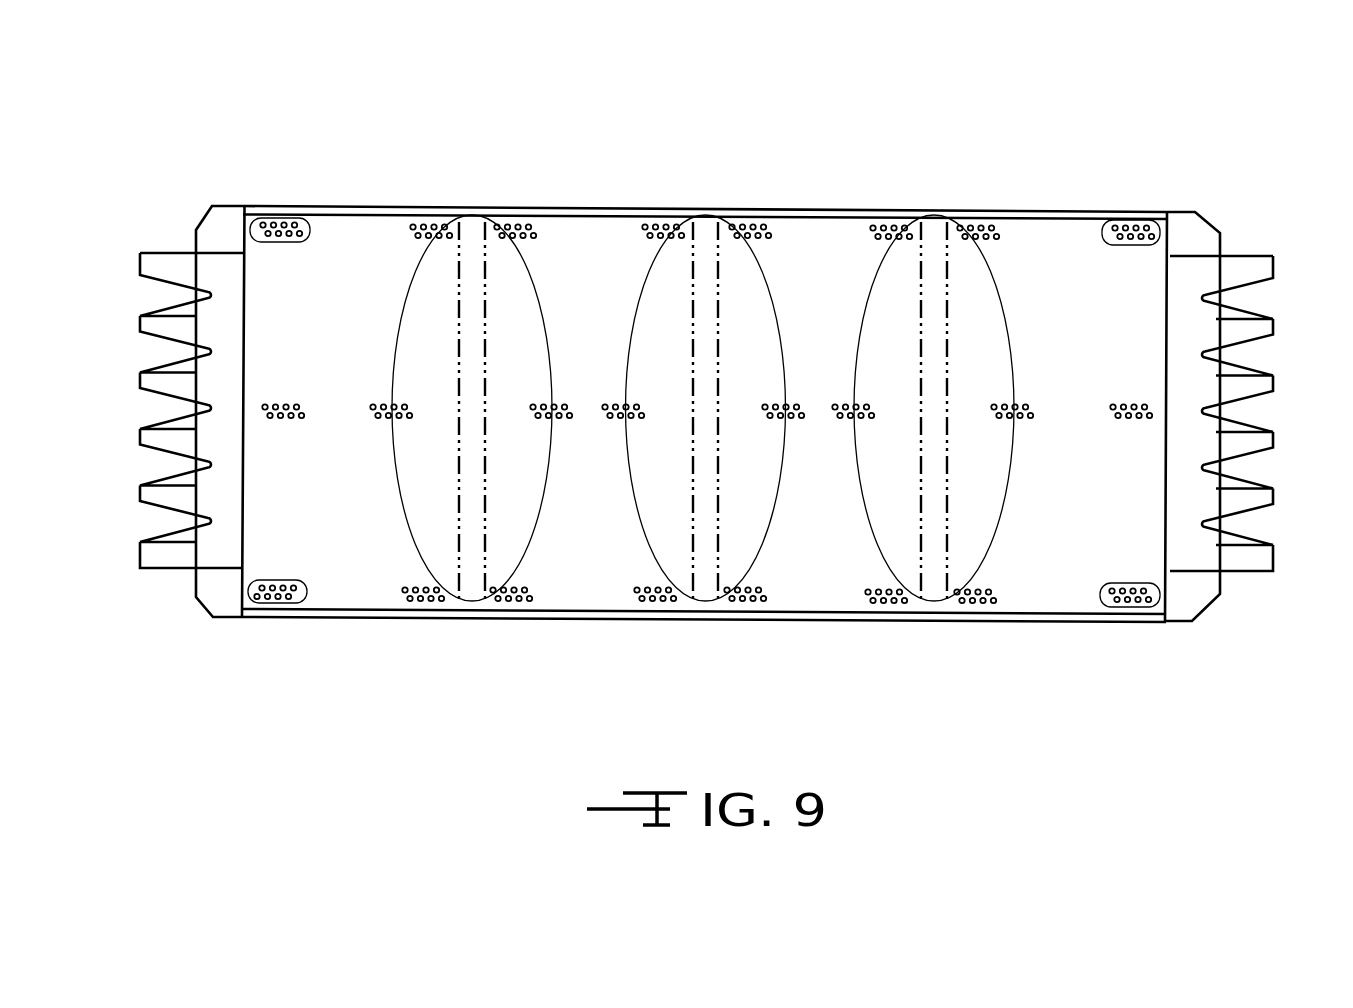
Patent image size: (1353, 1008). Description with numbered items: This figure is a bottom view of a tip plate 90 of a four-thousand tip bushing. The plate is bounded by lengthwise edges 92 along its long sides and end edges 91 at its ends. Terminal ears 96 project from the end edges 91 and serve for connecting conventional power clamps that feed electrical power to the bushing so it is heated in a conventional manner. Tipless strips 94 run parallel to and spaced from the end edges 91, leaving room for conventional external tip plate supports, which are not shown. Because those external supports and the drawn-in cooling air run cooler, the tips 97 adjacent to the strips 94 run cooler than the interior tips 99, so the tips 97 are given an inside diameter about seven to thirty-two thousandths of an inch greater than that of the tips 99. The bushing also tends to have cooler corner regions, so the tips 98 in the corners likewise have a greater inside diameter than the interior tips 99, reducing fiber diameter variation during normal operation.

The tip plate 90 is at (600, 252).
The end edges 91 is at (245, 305).
The lengthwise edges 92 is at (798, 207).
The tipless strips 94 is at (472, 233).
The terminal ears 96 is at (245, 503).
The tips adjacent to the strips 97 is at (402, 407).
The corner region tips 98 is at (282, 224).
The interior tips 99 is at (262, 411).